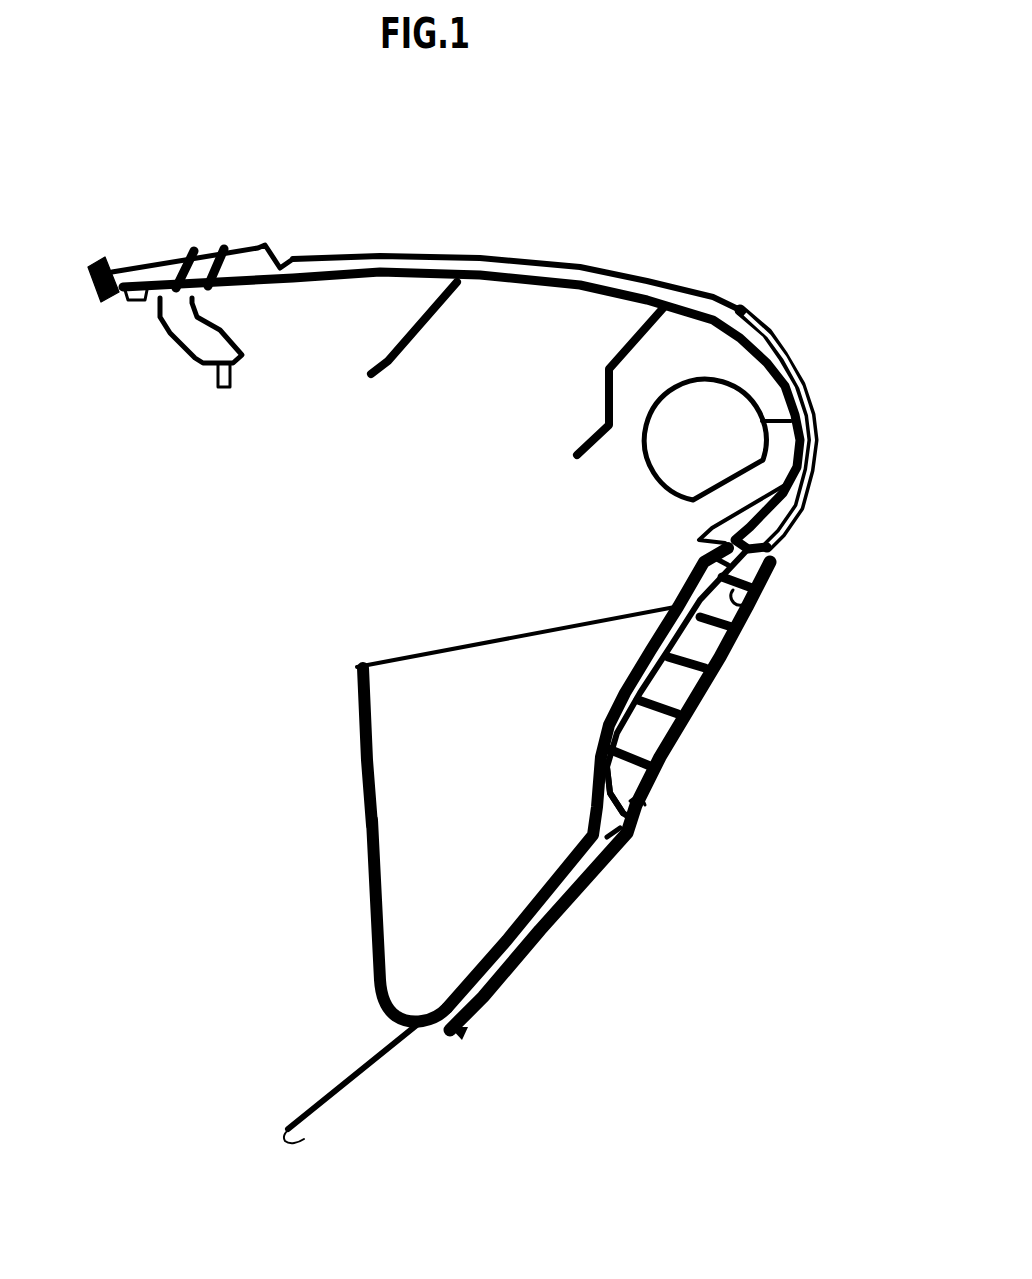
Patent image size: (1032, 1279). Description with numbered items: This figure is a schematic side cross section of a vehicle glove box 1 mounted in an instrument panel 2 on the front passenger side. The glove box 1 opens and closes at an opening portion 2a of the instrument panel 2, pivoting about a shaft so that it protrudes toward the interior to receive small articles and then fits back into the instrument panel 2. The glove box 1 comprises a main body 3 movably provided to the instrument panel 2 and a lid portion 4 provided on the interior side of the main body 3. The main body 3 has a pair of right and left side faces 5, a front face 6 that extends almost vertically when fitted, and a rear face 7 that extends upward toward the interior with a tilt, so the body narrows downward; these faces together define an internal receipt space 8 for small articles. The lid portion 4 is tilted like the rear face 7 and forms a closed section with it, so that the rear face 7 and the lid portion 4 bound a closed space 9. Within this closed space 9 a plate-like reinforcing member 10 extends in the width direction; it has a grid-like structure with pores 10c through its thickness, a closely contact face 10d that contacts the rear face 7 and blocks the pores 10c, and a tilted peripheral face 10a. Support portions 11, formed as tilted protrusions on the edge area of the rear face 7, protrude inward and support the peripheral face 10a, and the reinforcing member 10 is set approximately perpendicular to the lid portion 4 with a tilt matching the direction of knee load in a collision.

The glove box 1 is at (348, 663).
The instrument panel 2 is at (764, 335).
The opening portion 2a is at (422, 1027).
The main body 3 is at (360, 754).
The lid portion 4 is at (710, 697).
The side faces 5 is at (447, 672).
The front face 6 is at (368, 874).
The rear face 7 is at (612, 690).
The internal receipt space 8 is at (502, 804).
The closed space 9 is at (703, 647).
The reinforcing member 10 is at (665, 627).
The peripheral face 10a is at (750, 605).
The pores 10c is at (630, 777).
The closely contact face 10d is at (598, 755).
The support portions 11 is at (713, 557).